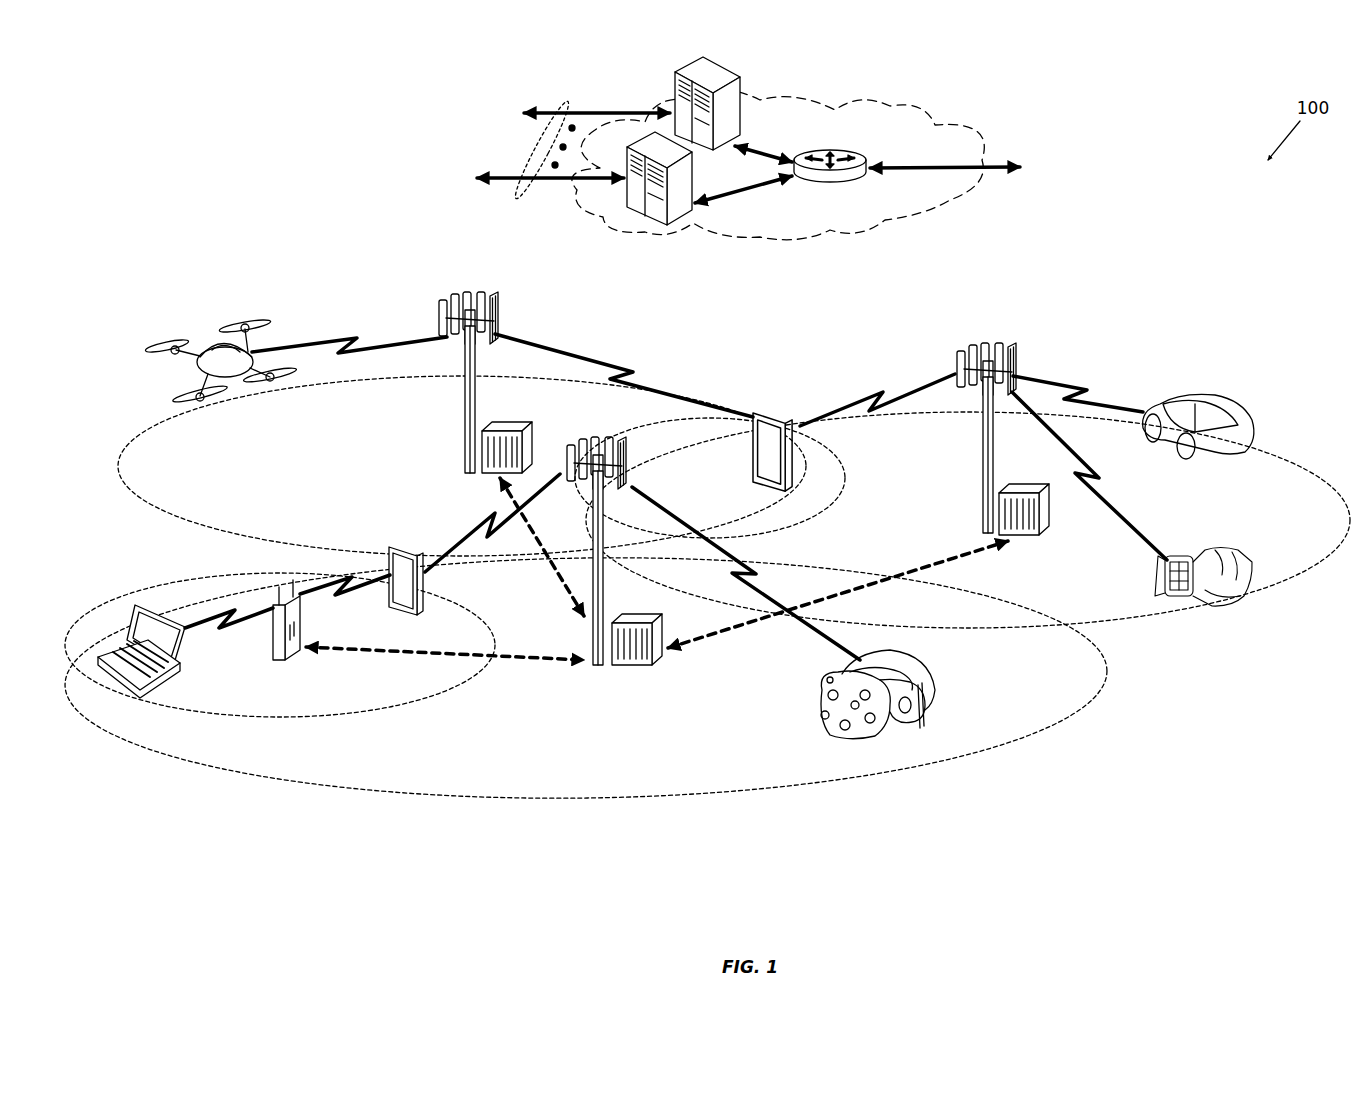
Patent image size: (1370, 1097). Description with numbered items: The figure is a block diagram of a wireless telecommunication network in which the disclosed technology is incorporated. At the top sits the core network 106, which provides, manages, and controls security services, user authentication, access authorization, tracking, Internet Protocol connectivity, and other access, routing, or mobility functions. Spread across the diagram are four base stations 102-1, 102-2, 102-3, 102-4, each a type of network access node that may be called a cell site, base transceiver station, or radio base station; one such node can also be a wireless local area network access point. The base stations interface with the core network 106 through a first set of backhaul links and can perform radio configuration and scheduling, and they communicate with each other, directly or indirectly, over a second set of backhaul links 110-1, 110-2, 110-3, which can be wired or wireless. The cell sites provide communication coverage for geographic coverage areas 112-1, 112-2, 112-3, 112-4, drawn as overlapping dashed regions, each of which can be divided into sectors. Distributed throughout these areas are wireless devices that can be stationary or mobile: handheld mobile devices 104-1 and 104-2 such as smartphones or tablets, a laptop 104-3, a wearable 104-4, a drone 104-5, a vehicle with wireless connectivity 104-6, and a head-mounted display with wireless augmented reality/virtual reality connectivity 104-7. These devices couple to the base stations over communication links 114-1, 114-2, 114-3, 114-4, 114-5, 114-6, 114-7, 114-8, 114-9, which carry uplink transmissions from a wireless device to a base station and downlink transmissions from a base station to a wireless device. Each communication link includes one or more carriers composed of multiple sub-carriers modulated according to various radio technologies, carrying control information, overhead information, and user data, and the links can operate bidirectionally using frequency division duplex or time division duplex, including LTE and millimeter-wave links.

The core network 106 is at (860, 232).
The base station 102-1 is at (595, 668).
The base station 102-2 is at (462, 420).
The base station 102-3 is at (982, 452).
The base station 102-4 is at (272, 648).
The handheld mobile device 104-1 is at (425, 593).
The handheld mobile device 104-2 is at (752, 457).
The laptop 104-3 is at (118, 690).
The wearable 104-4 is at (1185, 556).
The drone 104-5 is at (232, 386).
The vehicle with wireless connectivity 104-6 is at (1225, 408).
The head-mounted display 104-7 is at (928, 680).
The backhaul link 110-1 is at (345, 654).
The backhaul link 110-2 is at (902, 574).
The backhaul link 110-3 is at (560, 578).
The geographic coverage area 112-1 is at (525, 798).
The geographic coverage area 112-2 is at (402, 702).
The geographic coverage area 112-3 is at (180, 524).
The geographic coverage area 112-4 is at (1288, 452).
The communication link 114-1 is at (757, 577).
The communication link 114-2 is at (490, 522).
The communication link 114-3 is at (192, 628).
The communication link 114-4 is at (345, 594).
The communication link 114-5 is at (350, 335).
The communication link 114-6 is at (633, 376).
The communication link 114-7 is at (870, 395).
The communication link 114-8 is at (1105, 482).
The communication link 114-9 is at (1075, 387).